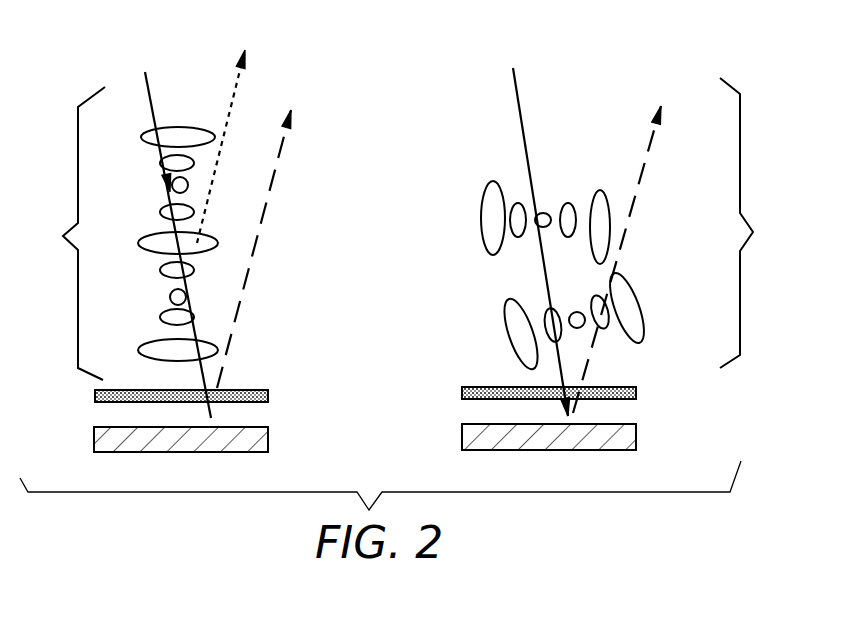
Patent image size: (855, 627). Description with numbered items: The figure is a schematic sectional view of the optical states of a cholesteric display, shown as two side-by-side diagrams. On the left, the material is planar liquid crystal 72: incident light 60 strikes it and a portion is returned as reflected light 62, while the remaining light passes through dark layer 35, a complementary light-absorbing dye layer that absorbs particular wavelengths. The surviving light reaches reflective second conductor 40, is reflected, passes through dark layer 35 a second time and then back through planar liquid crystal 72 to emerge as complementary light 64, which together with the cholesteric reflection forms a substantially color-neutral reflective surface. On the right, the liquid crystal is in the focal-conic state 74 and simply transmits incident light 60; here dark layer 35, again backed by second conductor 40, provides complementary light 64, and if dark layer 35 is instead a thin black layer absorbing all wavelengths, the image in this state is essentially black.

The dark layer 35 is at (94, 393).
The second conductor 40 is at (94, 440).
The incident light 60 is at (348, 229).
The reflected light 62 is at (228, 132).
The complementary light 64 is at (444, 249).
The planar liquid crystal 72 is at (68, 233).
The focal-conic state 74 is at (754, 223).